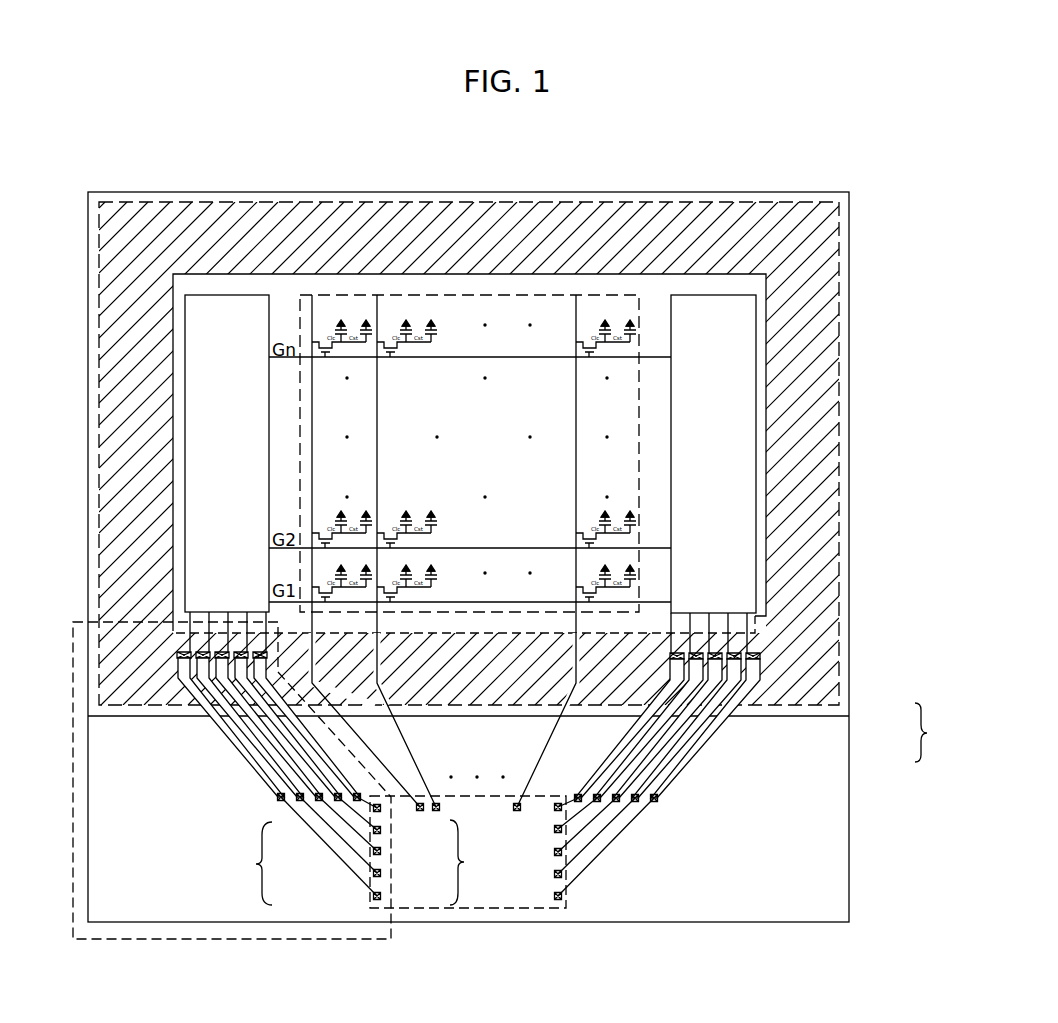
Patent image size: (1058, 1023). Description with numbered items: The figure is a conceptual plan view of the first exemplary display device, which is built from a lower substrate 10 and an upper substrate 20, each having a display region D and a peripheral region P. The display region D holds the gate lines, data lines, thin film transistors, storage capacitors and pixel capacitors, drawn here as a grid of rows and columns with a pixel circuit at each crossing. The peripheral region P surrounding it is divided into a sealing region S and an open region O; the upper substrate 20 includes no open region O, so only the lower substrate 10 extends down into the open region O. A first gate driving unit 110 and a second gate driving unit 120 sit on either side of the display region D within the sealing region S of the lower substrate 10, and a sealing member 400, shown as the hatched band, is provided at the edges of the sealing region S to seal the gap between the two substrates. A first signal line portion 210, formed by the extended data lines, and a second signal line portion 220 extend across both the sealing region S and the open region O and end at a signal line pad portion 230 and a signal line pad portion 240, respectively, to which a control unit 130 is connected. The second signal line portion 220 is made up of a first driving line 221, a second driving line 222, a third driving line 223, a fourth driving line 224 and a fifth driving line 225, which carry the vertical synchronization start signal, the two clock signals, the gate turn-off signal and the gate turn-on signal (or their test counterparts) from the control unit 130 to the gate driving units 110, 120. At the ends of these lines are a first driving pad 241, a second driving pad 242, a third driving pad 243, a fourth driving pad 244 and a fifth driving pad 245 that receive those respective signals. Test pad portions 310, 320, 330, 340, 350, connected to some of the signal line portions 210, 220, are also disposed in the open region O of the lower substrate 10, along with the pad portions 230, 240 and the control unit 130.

The lower substrate 10 is at (471, 561).
The upper substrate 20 is at (826, 191).
The first gate driving unit 110 is at (232, 294).
The second gate driving unit 120 is at (712, 294).
The control unit 130 is at (527, 909).
The sealing member 400 is at (820, 449).
The first signal line portion 210 is at (408, 745).
The signal line pad portion 230 is at (441, 807).
The second signal line portion 220 is at (299, 853).
The first driving line 221 is at (368, 803).
The second driving line 222 is at (370, 824).
The third driving line 223 is at (371, 846).
The fourth driving line 224 is at (372, 868).
The fifth driving line 225 is at (372, 891).
The signal line pad portion 240 is at (439, 858).
The first driving pad 241 is at (382, 808).
The second driving pad 242 is at (382, 830).
The third driving pad 243 is at (382, 851).
The fourth driving pad 244 is at (382, 873).
The fifth driving pad 245 is at (382, 896).
The test pad portion 310 is at (277, 800).
The test pad portion 320 is at (267, 783).
The test pad portion 330 is at (250, 765).
The test pad portion 340 is at (232, 738).
The test pad portion 350 is at (208, 730).
The display region D is at (620, 294).
The sealing region S is at (851, 706).
The open region O is at (843, 750).
The peripheral region P is at (932, 732).